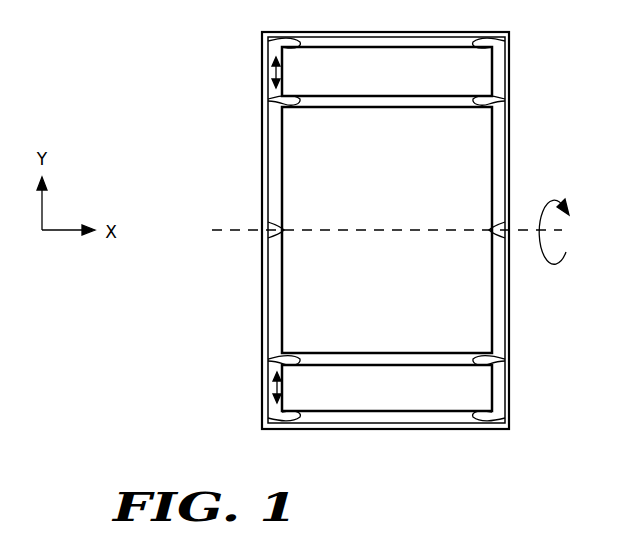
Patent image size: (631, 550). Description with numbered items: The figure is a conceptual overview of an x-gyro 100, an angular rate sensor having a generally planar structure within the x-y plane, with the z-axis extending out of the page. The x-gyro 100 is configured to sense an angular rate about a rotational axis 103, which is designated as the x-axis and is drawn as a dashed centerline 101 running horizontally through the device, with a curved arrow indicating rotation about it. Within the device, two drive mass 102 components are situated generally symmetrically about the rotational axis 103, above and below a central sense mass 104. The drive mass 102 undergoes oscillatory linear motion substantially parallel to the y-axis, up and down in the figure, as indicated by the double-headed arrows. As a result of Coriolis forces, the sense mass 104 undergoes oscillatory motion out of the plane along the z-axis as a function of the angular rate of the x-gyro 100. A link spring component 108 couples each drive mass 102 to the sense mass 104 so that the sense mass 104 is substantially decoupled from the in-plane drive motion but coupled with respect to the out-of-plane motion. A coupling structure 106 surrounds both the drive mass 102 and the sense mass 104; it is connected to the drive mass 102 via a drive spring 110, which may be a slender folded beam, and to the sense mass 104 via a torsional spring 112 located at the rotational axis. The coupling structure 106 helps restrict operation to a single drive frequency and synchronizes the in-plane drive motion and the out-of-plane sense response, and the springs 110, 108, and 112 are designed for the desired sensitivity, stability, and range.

The x-gyro 100 is at (405, 499).
The axis of rotation 101 is at (235, 229).
The drive mass 102 is at (405, 84).
The rotational axis 103 is at (541, 232).
The sense mass 104 is at (405, 174).
The coupling structure 106 is at (262, 146).
The link spring component 108 is at (268, 100).
The drive spring 110 is at (268, 43).
The spring 112 is at (272, 238).